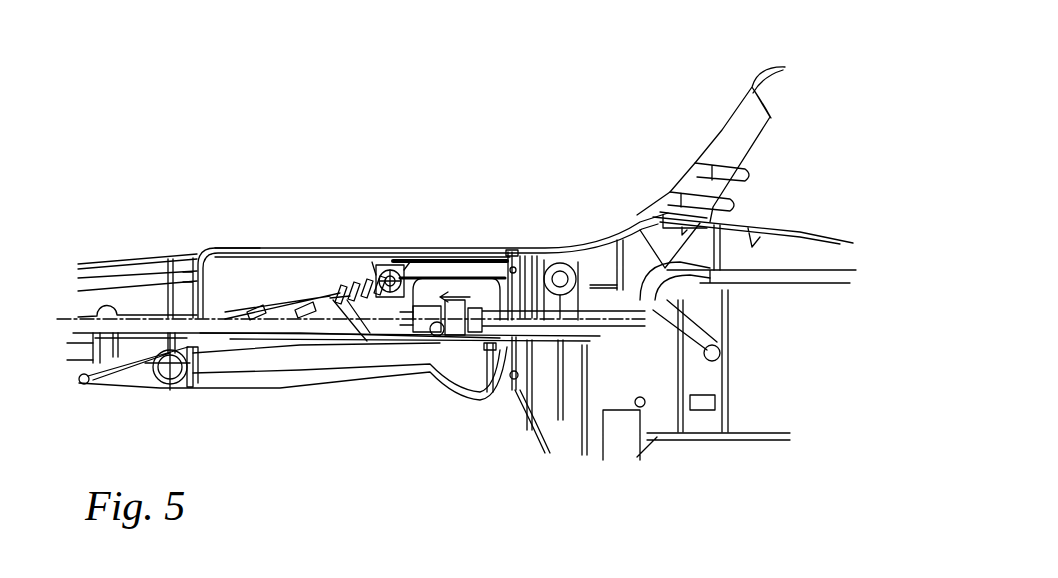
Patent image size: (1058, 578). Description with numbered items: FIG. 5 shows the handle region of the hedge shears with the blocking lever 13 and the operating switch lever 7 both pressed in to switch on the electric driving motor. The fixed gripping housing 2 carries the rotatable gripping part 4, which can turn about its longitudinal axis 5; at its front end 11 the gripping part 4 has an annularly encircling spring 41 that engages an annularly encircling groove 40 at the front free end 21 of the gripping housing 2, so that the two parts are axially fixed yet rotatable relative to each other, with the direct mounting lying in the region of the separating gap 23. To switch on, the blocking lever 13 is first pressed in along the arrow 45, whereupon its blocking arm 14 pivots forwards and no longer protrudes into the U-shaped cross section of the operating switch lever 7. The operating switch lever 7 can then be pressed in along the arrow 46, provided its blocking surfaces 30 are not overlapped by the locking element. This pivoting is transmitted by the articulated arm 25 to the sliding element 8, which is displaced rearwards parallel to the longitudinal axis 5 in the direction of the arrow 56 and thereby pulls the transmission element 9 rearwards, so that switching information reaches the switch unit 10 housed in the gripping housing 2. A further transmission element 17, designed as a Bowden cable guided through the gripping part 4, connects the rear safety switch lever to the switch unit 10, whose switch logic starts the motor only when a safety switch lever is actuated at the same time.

The gripping housing 2 is at (626, 207).
The gripping part 4 is at (110, 263).
The longitudinal axis 5 is at (60, 316).
The operating switch lever 7 is at (330, 387).
The sliding element 8 is at (386, 268).
The transmission element 9 is at (580, 345).
The switch unit 10 is at (749, 366).
The front end 11 is at (508, 250).
The blocking lever 13 is at (278, 263).
The blocking arm 14 is at (360, 340).
The transmission element 17 is at (263, 333).
The front free end 21 is at (537, 250).
The separating gap 23 is at (516, 237).
The articulated arm 25 is at (440, 345).
The blocking surfaces 30 is at (500, 345).
The groove 40 is at (522, 256).
The spring 41 is at (565, 248).
The arrow 45 is at (238, 232).
The arrow 46 is at (385, 472).
The arrow 56 is at (455, 286).